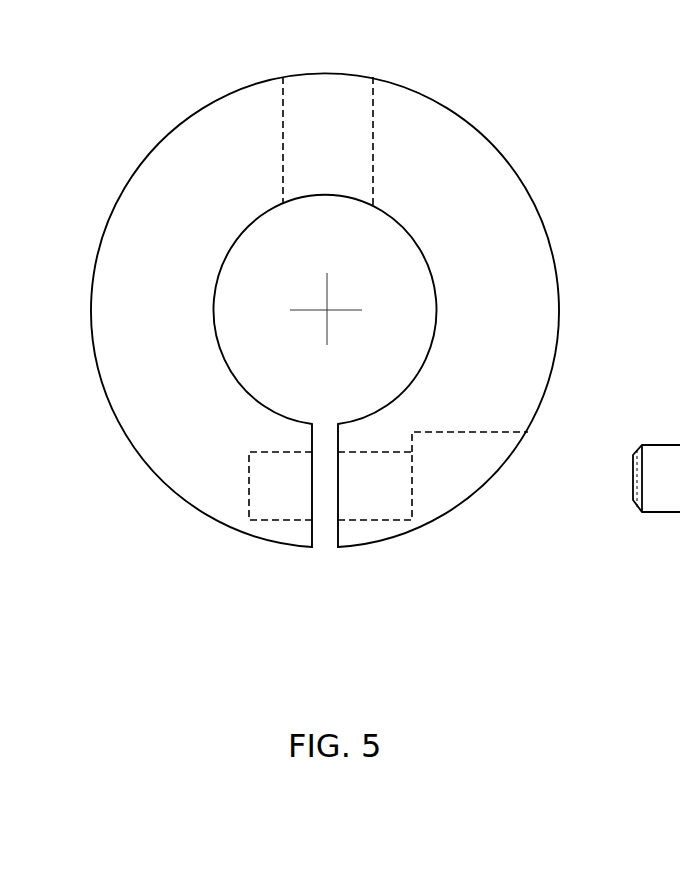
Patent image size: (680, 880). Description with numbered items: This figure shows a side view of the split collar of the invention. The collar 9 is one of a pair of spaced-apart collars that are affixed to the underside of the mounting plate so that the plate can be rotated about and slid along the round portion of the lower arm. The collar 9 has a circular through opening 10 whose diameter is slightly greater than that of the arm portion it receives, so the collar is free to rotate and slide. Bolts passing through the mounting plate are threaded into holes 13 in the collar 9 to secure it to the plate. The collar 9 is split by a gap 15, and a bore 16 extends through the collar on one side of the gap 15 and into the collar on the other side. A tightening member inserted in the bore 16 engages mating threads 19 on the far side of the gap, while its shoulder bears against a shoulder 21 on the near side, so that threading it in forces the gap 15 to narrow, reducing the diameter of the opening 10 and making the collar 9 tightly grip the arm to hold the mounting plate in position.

The collar 9 is at (550, 233).
The circular through opening 10 is at (423, 245).
The threaded hole 13 is at (283, 138).
The gap 15 is at (323, 548).
The bore 16 is at (370, 522).
The mating threads 19 is at (248, 520).
The shoulder 21 is at (413, 433).